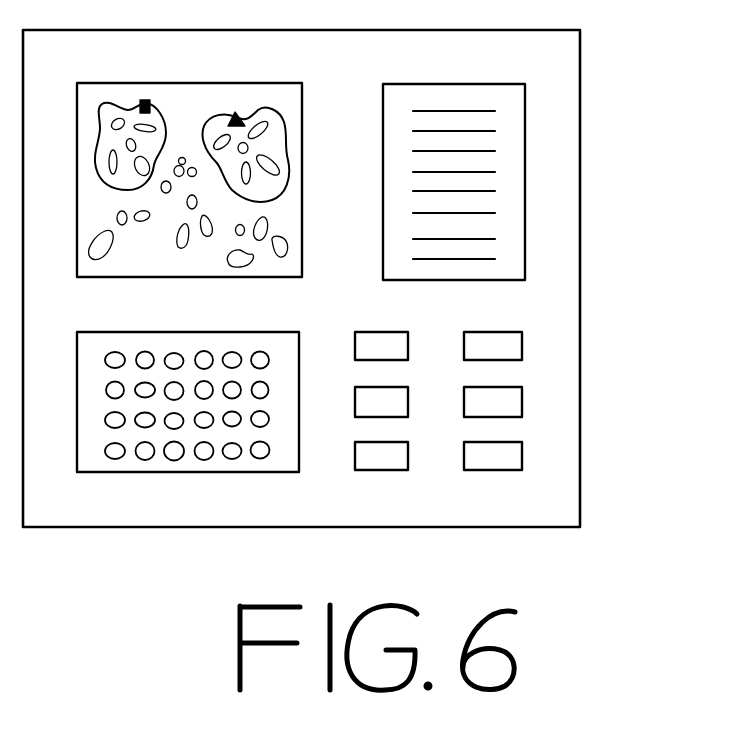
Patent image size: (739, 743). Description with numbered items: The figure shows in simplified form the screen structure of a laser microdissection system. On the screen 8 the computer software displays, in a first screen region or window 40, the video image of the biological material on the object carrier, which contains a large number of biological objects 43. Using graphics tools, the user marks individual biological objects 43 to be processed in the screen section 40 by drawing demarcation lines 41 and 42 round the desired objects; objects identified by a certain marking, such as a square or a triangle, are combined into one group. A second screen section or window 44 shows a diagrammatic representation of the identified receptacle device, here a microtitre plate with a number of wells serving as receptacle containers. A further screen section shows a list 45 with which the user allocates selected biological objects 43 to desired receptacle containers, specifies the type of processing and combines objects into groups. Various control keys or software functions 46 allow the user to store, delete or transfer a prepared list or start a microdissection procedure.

The screen 8 is at (583, 57).
The first screen region or window 40 is at (232, 83).
The demarcation line 41 is at (155, 109).
The demarcation line 42 is at (287, 120).
The biological objects 43 is at (174, 236).
The second screen section or window 44 is at (230, 332).
The list 45 is at (450, 84).
The control keys or software functions 46 is at (523, 395).